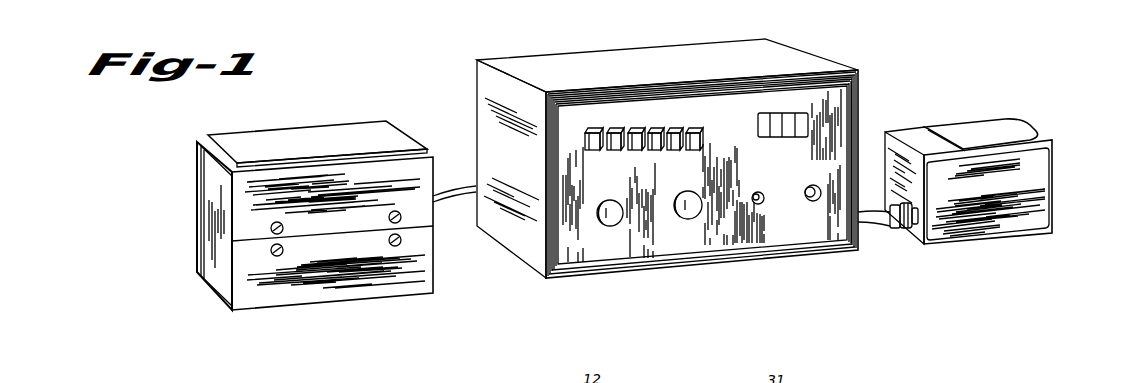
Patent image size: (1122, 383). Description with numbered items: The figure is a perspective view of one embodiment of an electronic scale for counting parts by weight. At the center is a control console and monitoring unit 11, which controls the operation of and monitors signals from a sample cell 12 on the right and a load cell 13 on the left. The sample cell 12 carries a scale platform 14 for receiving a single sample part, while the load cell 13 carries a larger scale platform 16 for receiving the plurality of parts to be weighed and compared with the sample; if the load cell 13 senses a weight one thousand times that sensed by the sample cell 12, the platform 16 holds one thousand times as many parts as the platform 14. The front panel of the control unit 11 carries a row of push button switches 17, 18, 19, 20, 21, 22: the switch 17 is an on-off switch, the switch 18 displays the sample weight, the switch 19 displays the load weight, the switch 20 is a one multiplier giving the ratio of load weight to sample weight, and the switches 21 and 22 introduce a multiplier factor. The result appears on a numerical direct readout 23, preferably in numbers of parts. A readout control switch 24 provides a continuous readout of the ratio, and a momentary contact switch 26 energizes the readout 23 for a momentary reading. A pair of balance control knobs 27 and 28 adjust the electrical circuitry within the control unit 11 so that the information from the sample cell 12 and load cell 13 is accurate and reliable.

The control console and monitoring unit 11 is at (694, 43).
The sample cell 12 is at (1046, 143).
The load cell 13 is at (197, 196).
The scale platform 14 is at (998, 122).
The scale platform 16 is at (238, 128).
The push button switch 17 is at (592, 128).
The push button switch 18 is at (613, 128).
The push button switch 19 is at (633, 128).
The push button switch 20 is at (654, 128).
The push button switch 21 is at (675, 128).
The push button switch 22 is at (702, 136).
The numerical direct readout 23 is at (779, 140).
The readout control switch 24 is at (752, 196).
The momentary contact switch 26 is at (803, 192).
The balance control knob 27 is at (612, 200).
The balance control knob 28 is at (695, 192).